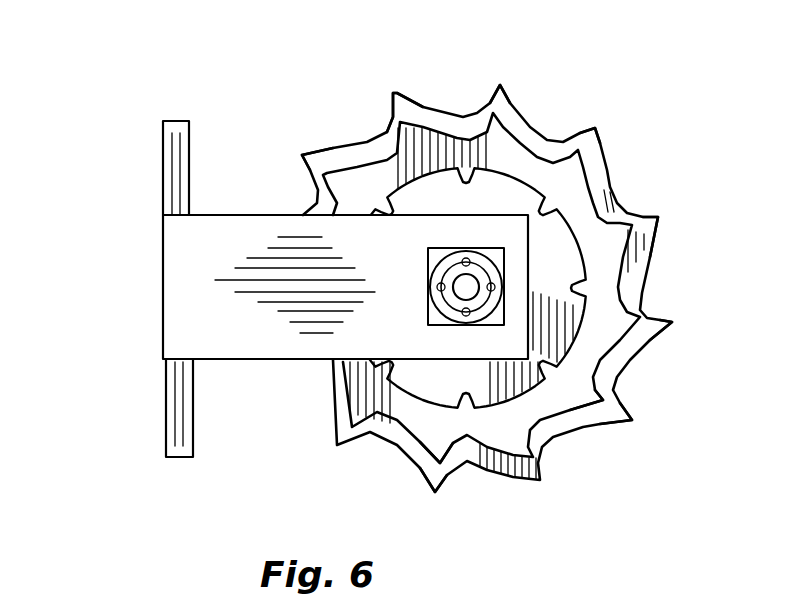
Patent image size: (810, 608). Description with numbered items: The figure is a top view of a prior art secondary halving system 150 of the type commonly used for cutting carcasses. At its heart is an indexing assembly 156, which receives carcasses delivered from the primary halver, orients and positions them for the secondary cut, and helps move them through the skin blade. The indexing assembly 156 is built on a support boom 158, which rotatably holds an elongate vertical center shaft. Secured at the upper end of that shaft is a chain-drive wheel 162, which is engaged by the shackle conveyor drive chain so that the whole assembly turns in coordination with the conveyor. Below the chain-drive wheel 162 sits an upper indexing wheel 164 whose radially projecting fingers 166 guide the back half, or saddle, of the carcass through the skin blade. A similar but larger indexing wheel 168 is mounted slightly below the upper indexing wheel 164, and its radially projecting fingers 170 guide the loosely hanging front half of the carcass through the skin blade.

The secondary halving system 150 is at (280, 273).
The indexing assembly 156 is at (237, 215).
The support boom 158 is at (173, 417).
The chain-drive wheel 162 is at (493, 395).
The upper indexing wheel 164 is at (530, 168).
The fingers 166 is at (603, 400).
The indexing wheel 168 is at (610, 188).
The fingers 170 is at (498, 86).